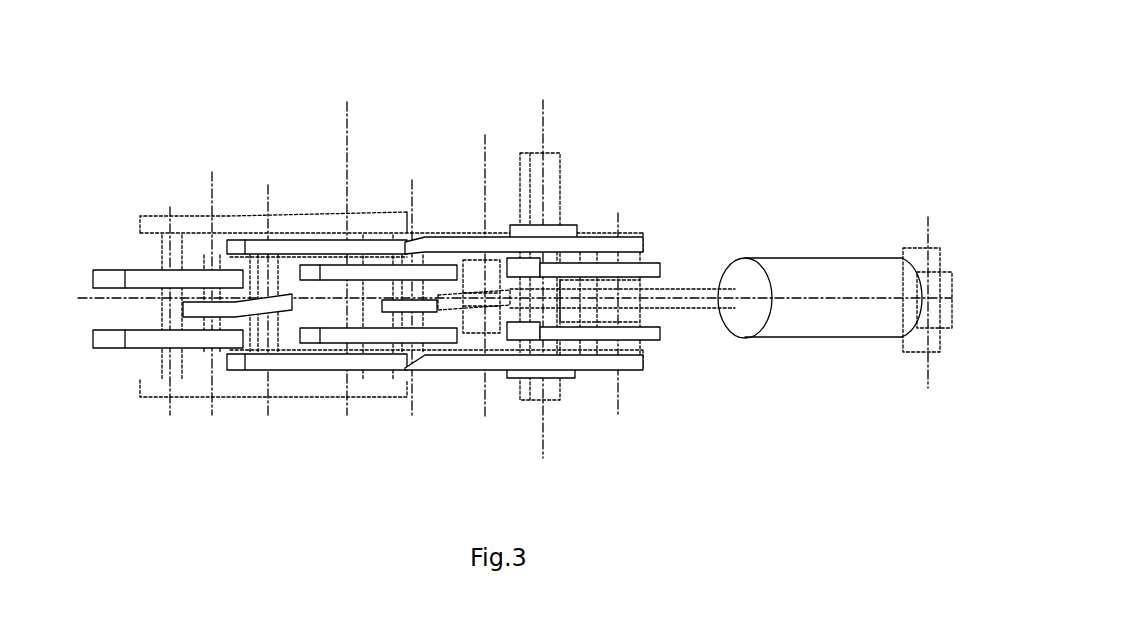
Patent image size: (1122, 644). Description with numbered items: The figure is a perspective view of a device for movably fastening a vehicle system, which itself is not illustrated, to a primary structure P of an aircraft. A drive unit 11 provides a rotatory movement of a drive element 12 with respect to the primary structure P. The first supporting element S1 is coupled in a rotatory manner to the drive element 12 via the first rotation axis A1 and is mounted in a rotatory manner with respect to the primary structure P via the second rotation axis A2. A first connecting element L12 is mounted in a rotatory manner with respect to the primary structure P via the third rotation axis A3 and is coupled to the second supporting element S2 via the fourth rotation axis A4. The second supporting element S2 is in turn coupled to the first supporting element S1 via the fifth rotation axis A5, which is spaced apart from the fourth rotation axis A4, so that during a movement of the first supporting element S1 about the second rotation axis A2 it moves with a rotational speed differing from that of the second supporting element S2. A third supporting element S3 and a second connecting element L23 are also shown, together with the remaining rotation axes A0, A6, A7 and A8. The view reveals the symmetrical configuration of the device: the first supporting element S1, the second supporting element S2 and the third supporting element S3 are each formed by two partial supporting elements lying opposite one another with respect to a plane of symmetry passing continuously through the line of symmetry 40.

The drive unit 11 is at (758, 242).
The drive element 12 is at (693, 307).
The line of symmetry 40 is at (92, 300).
The rotation axis A0 is at (928, 367).
The first rotation axis A1 is at (618, 213).
The second rotation axis A2 is at (547, 153).
The third rotation axis A3 is at (473, 268).
The fourth rotation axis A4 is at (412, 182).
The fifth rotation axis A5 is at (347, 120).
The sixth rotation axis A6 is at (268, 190).
The seventh rotation axis A7 is at (212, 172).
The eighth rotation axis A8 is at (170, 412).
The primary structure P is at (447, 233).
The first supporting element S1 is at (400, 237).
The second supporting element S2 is at (283, 217).
The third supporting element S3 is at (117, 265).
The first connecting element L12 is at (410, 362).
The second connecting element L23 is at (225, 362).